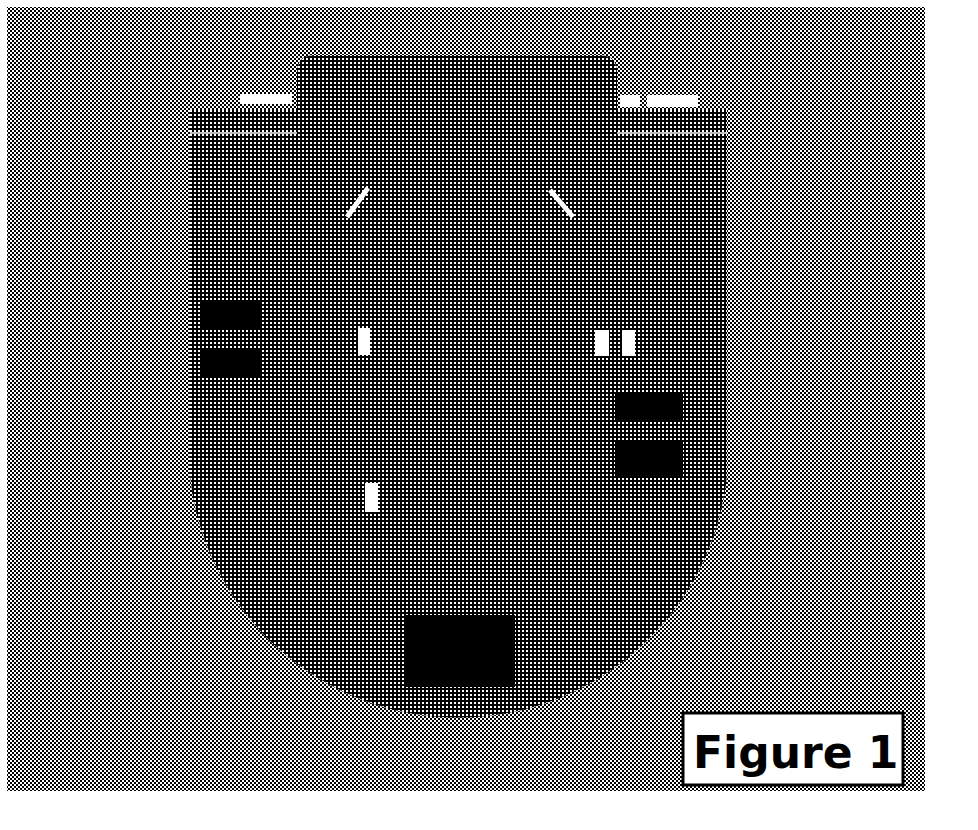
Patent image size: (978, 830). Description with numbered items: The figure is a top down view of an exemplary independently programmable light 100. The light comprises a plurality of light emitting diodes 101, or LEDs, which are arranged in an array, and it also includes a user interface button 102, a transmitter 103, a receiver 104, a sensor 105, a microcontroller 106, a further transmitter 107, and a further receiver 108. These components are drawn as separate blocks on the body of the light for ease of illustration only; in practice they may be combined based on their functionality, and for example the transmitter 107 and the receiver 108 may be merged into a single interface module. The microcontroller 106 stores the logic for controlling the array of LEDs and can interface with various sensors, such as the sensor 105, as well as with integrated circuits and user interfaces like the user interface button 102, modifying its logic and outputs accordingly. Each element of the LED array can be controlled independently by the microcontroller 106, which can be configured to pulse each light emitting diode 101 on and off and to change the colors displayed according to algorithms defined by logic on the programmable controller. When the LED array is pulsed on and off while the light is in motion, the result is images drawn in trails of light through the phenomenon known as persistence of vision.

The independently programmable light 100 is at (458, 368).
The light emitting diodes 101 is at (720, 96).
The user interface button 102 is at (518, 290).
The transmitter 103 is at (698, 405).
The receiver 104 is at (698, 462).
The sensor 105 is at (388, 661).
The microcontroller 106 is at (412, 459).
The transmitter 107 is at (200, 370).
The receiver 108 is at (190, 318).